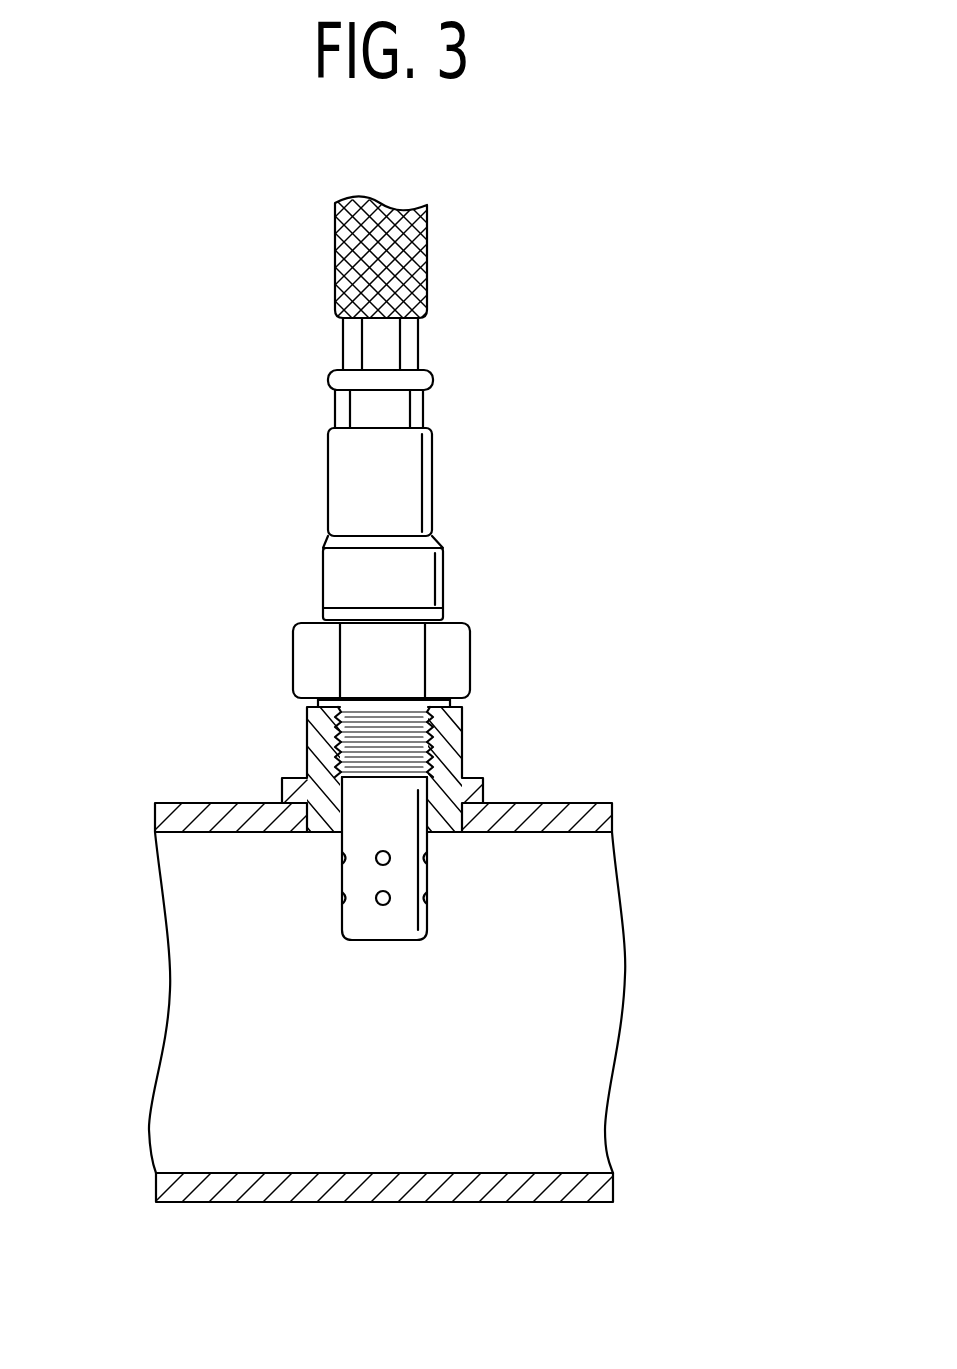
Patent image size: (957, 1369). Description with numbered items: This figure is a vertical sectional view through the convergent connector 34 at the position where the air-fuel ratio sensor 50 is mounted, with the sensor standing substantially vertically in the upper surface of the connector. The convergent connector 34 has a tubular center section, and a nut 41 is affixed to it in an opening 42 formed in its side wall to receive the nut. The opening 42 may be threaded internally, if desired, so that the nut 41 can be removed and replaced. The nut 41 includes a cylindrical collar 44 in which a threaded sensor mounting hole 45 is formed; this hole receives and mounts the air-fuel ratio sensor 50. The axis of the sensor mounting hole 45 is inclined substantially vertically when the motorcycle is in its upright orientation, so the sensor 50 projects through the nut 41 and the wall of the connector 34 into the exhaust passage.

The convergent connector 34 is at (378, 1202).
The nut 41 is at (482, 760).
The opening 42 is at (445, 833).
The cylindrical collar 44 is at (467, 723).
The threaded sensor mounting hole 45 is at (357, 748).
The air-fuel ratio sensor 50 is at (280, 683).